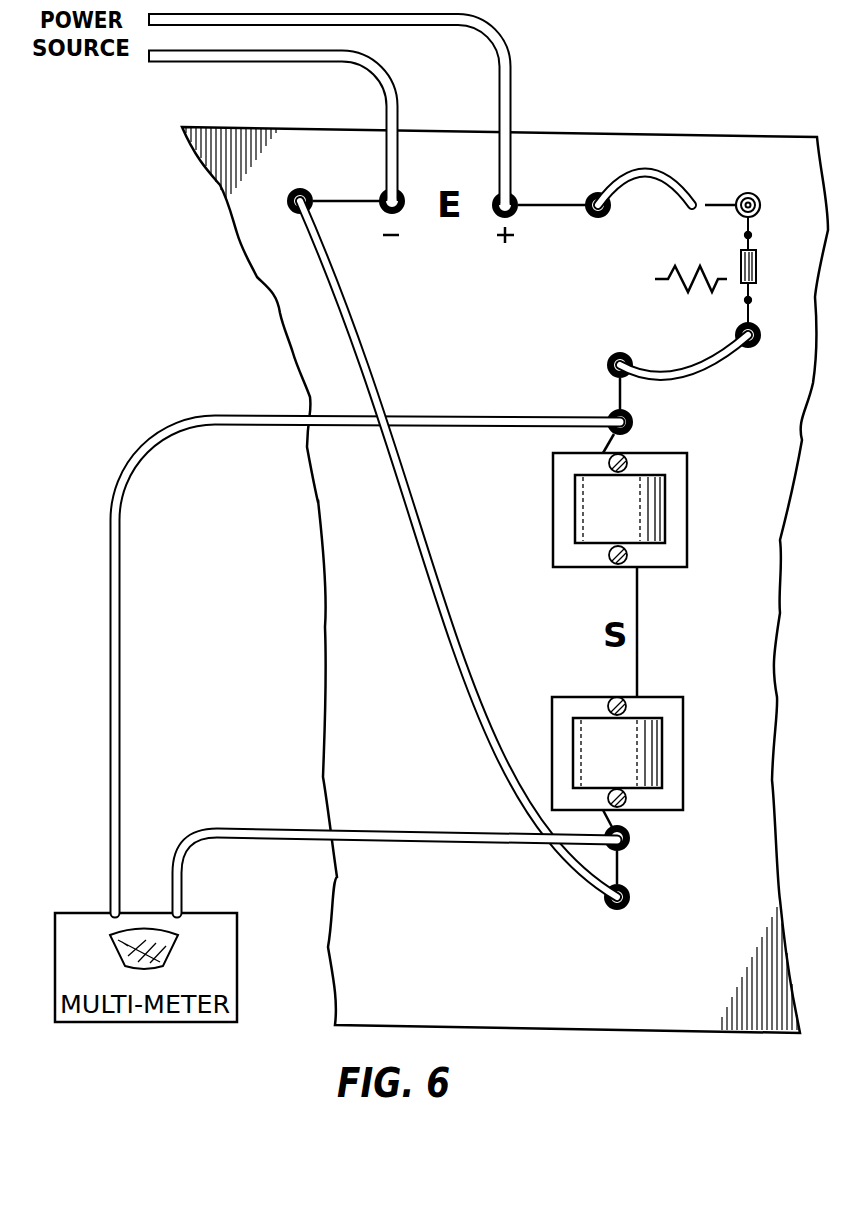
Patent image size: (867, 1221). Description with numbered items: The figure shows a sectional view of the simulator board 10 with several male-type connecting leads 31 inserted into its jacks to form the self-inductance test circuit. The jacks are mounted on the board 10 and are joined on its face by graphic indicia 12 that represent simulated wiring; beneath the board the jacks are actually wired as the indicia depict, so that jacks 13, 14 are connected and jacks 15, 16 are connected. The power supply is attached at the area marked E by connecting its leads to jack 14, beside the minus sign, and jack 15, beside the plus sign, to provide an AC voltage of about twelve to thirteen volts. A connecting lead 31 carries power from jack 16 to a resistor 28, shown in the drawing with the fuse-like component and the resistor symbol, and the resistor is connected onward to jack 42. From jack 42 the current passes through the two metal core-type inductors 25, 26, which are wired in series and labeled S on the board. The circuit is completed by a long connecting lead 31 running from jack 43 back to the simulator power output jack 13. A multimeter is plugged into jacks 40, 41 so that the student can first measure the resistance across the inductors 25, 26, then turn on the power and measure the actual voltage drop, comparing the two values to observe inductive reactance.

The simulator board 10 is at (742, 130).
The graphic indicia 12 is at (351, 202).
The jack 13 is at (298, 187).
The jack 14 is at (379, 193).
The jack 15 is at (515, 191).
The jack 16 is at (591, 218).
The metal core-type inductor 25 is at (688, 513).
The metal core-type inductor 26 is at (688, 756).
The resistor 28 is at (758, 268).
The male-type connecting lead 31 is at (655, 179).
The jack 40 is at (607, 414).
The jack 41 is at (632, 840).
The jack 42 is at (606, 363).
The jack 43 is at (630, 902).